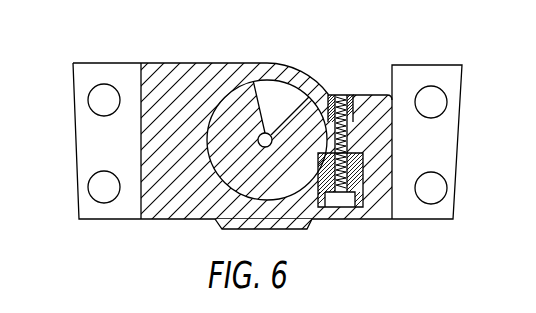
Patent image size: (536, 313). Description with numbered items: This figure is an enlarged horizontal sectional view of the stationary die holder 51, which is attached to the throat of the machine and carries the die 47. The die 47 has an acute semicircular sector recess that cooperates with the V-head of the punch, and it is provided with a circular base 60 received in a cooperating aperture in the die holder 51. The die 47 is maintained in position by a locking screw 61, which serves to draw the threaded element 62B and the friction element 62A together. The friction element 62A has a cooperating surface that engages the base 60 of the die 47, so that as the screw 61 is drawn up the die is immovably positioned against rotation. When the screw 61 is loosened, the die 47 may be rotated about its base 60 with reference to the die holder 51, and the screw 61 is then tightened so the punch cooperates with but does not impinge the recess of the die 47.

The die holder 51 is at (216, 68).
The die 47 is at (291, 122).
The circular base 60 is at (270, 178).
The locking screw 61 is at (356, 118).
The friction element 62A is at (323, 205).
The threaded element 62B is at (350, 95).